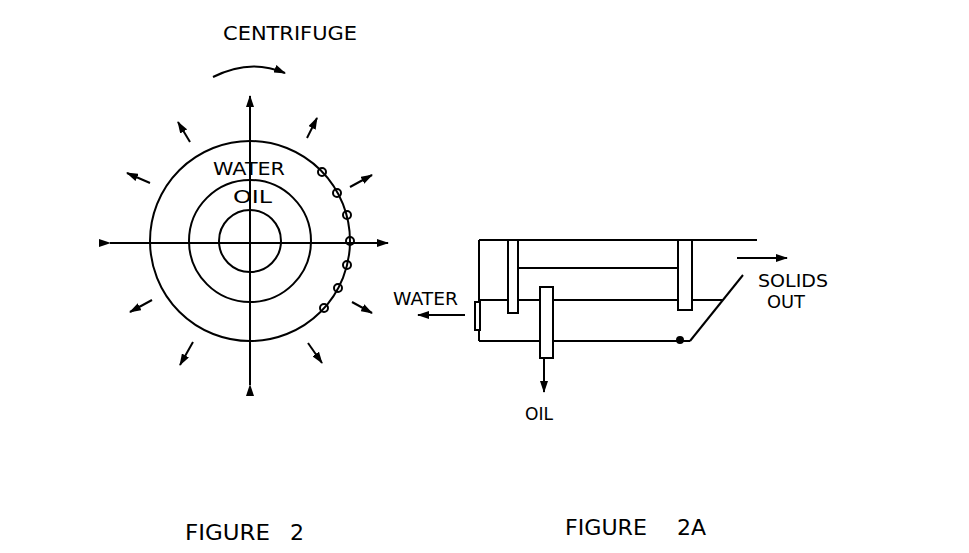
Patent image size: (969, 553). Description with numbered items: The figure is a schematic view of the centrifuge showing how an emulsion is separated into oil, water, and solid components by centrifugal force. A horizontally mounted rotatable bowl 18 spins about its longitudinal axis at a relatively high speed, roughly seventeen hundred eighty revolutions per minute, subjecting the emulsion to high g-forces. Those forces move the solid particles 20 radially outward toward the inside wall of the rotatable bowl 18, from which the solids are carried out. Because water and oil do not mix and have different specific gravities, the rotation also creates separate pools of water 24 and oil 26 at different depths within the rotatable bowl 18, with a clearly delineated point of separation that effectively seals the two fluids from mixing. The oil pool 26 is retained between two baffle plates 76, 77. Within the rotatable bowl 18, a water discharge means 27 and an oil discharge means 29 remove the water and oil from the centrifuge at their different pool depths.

In FIG. 2, the rotatable bowl 18 is at (167, 295).
In FIG. 2A, the rotatable bowl 18 is at (507, 343).
In FIG. 2, the solid particles 20 is at (324, 170).
In FIG. 2A, the solid particles 20 is at (680, 343).
In FIG. 2, the water pool 24 is at (195, 177).
In FIG. 2A, the water pool 24 is at (601, 315).
In FIG. 2, the oil pool 26 is at (292, 212).
In FIG. 2A, the oil pool 26 is at (618, 269).
In FIG. 2A, the water discharge means 27 is at (477, 332).
In FIG. 2A, the oil discharge means 29 is at (553, 358).
In FIG. 2A, the baffle plate 76 is at (687, 240).
In FIG. 2A, the baffle plate 77 is at (516, 240).